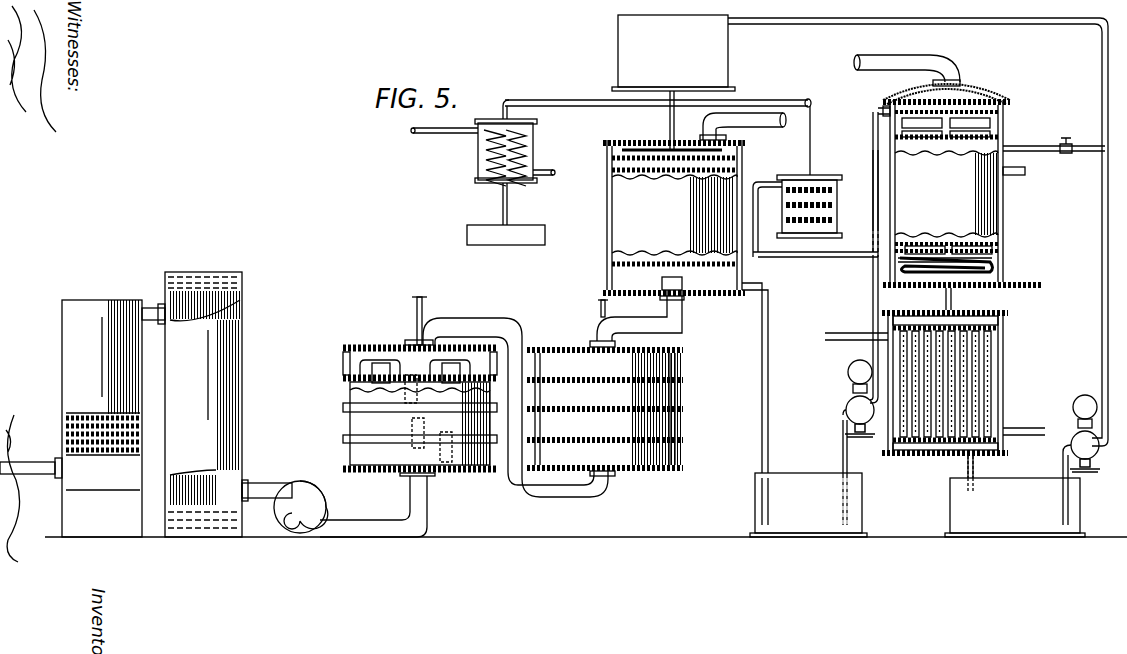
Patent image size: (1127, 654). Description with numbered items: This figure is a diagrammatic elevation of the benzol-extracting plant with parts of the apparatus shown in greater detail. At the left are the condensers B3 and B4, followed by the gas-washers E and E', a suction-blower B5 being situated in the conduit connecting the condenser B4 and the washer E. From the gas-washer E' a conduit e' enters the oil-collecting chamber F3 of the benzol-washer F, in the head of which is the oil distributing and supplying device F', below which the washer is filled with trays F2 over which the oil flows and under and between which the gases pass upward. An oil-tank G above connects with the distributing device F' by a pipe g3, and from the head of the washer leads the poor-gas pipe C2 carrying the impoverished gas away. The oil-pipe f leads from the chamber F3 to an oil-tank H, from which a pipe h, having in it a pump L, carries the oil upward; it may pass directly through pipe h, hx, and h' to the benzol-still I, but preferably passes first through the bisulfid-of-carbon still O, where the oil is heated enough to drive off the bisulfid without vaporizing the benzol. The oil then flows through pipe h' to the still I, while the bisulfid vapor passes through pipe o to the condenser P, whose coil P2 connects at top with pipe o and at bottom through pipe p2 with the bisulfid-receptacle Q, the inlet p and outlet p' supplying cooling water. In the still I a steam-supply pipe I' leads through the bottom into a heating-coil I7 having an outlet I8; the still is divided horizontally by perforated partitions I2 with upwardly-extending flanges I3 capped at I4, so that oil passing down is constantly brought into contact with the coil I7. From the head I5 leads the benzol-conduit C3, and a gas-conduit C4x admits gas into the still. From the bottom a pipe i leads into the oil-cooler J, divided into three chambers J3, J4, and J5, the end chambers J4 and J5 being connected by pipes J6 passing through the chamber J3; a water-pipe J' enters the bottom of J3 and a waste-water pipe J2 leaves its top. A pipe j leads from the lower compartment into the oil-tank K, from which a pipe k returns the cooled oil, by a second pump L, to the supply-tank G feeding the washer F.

The condenser B3 is at (71, 418).
The condenser B4 is at (217, 404).
The suction-blower B5 is at (300, 474).
The gas-washer E is at (475, 397).
The gas-washer E' is at (605, 399).
The conduit e' is at (650, 315).
The benzol-washer F is at (655, 210).
The oil distributing and supplying device F' is at (672, 145).
The trays F2 is at (612, 256).
The oil-collecting chamber F3 is at (687, 284).
The stem g3 is at (677, 111).
The poor-gas pipe C2 is at (775, 131).
The pipe o is at (777, 110).
The oil-tank G is at (673, 53).
The pipe k is at (794, 30).
The bisulfid-of-carbon still O is at (815, 203).
The pipe h' is at (872, 166).
The pipe hx is at (870, 248).
The pipe h is at (835, 391).
The benzol-still I is at (975, 163).
The head I5 is at (955, 89).
The benzol-conduit C3 is at (869, 46).
The cap I4 is at (1000, 112).
The upwardly-extending flanges I3 is at (998, 126).
The perforated partitions I2 is at (1003, 137).
The gas-conduit C4x is at (1036, 149).
The outlet I8 is at (1012, 176).
The heating-coil I7 is at (886, 270).
The steam-supply pipe I' is at (983, 283).
The pipe i is at (946, 297).
The oil-cooler J is at (938, 390).
The chamber J3 is at (985, 363).
The pipes J6 is at (975, 399).
The end chamber J4 is at (1005, 311).
The end chamber J5 is at (931, 456).
The waste-water pipe J2 is at (846, 330).
The water-pipe J' is at (1024, 418).
The pipe j is at (974, 480).
The oil-tank H is at (808, 505).
The oil-tank K is at (1015, 507).
The oil-pipe f is at (766, 398).
The pump L is at (1073, 404).
The condenser P is at (478, 161).
The coil P2 is at (480, 141).
The water outlet p' is at (444, 119).
The water inlet p is at (544, 165).
The pipe p2 is at (503, 204).
The bisulfid-receptacle Q is at (504, 240).